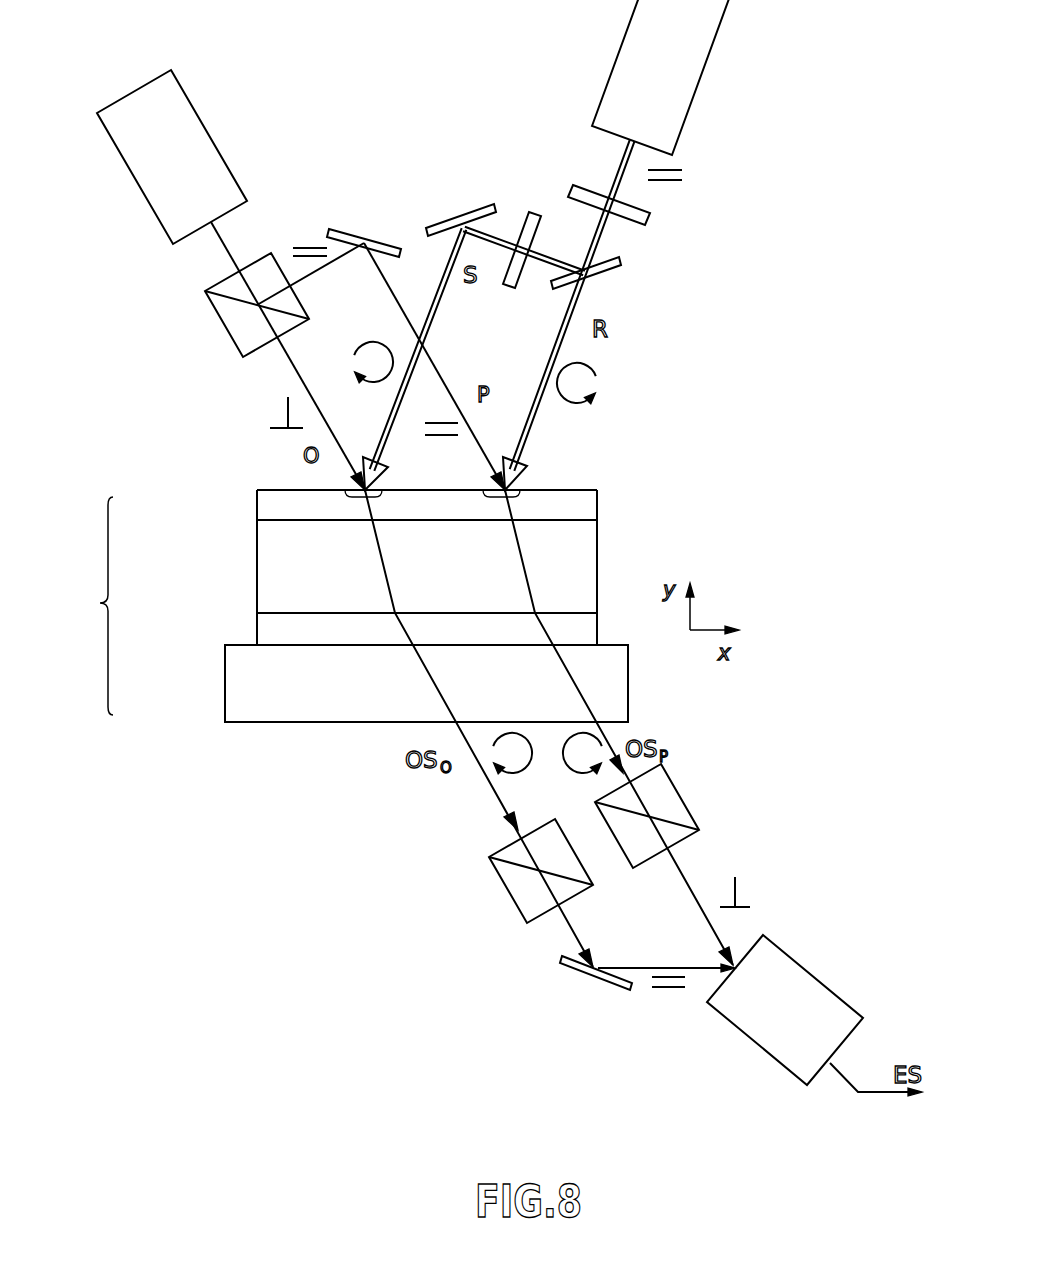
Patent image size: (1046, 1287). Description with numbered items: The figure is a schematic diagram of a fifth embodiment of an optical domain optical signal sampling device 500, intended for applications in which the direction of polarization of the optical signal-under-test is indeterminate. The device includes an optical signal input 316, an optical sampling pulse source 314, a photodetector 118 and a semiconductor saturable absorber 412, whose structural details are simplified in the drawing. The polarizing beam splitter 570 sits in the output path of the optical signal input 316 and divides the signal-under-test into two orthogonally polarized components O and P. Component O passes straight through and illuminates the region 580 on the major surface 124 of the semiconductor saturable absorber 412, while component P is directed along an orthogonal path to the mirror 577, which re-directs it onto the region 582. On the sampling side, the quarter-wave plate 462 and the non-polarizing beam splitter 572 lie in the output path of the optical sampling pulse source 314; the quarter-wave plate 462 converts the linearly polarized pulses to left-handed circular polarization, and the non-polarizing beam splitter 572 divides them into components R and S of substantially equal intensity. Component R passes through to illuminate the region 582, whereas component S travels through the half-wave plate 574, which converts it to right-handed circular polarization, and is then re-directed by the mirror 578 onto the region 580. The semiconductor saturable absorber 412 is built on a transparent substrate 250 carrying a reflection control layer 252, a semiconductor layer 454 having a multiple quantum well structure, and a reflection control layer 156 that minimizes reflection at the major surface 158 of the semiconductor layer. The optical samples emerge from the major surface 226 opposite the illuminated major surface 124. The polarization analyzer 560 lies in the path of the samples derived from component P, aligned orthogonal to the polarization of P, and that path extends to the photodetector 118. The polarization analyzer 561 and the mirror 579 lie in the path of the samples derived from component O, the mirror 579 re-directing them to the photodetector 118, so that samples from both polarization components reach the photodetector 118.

The optical signal input 316 is at (195, 170).
The optical sampling pulse source 314 is at (680, 90).
The polarizing beam splitter 570 is at (270, 252).
The mirror 577 is at (360, 239).
The mirror 578 is at (453, 224).
The half-wave plate 574 is at (538, 210).
The quarter-wave plate 462 is at (645, 213).
The non-polarizing beam splitter 572 is at (614, 275).
The major surface 124 is at (558, 489).
The major surface of the semiconductor layer 158 is at (586, 520).
The reflection control layer 156 is at (257, 505).
The semiconductor layer 454 is at (257, 560).
The reflection control layer 252 is at (257, 630).
The transparent substrate 250 is at (225, 680).
The major surface 226 is at (583, 647).
The semiconductor saturable absorber 412 is at (100, 603).
The region 580 is at (366, 498).
The region 582 is at (505, 498).
The optical domain optical signal sampling device 500 is at (370, 798).
The polarization analyzer 560 is at (681, 793).
The polarization analyzer 561 is at (507, 897).
The mirror 579 is at (594, 978).
The photodetector 118 is at (803, 1030).